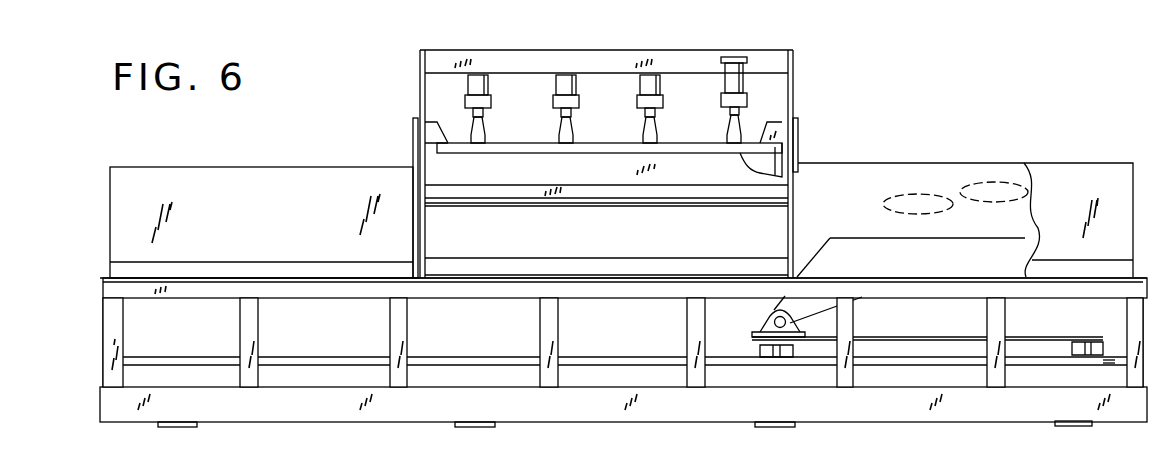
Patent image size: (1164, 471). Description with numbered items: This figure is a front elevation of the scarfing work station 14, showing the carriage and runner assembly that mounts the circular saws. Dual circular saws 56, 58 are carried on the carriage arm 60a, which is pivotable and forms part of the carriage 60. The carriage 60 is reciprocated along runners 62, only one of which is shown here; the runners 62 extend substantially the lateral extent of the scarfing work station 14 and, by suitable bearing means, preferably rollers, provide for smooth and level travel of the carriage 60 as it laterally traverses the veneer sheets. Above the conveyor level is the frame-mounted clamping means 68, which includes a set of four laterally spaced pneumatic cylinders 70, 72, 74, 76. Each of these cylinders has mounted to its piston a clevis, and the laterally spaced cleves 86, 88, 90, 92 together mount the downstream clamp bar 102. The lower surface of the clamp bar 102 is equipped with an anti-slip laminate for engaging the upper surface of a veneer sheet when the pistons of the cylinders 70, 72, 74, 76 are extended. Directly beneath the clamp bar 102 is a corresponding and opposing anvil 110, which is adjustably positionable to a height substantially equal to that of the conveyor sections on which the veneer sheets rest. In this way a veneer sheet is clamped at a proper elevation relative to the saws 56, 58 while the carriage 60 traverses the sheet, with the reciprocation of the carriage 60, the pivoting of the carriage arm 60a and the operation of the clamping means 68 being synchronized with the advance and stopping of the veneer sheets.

The scarfing work station 14 is at (623, 233).
The circular saw 56 is at (922, 193).
The circular saw 58 is at (994, 162).
The carriage 60 is at (962, 335).
The carriage arm 60a is at (898, 266).
The runner 62 is at (597, 355).
The clamping means 68 is at (411, 198).
The pneumatic cylinder 70 is at (490, 81).
The pneumatic cylinder 72 is at (575, 84).
The pneumatic cylinder 74 is at (662, 84).
The pneumatic cylinder 76 is at (790, 88).
The clevis 86 is at (483, 122).
The clevis 88 is at (572, 124).
The clevis 90 is at (657, 126).
The clevis 92 is at (743, 122).
The downstream clamp bar 102 is at (775, 155).
The anvil 110 is at (787, 181).